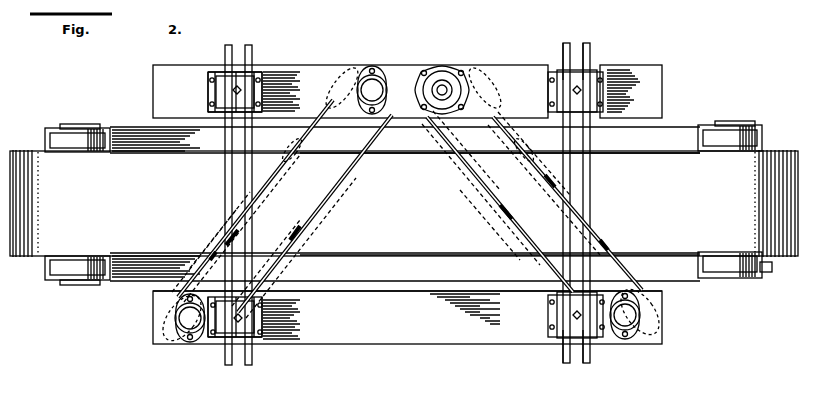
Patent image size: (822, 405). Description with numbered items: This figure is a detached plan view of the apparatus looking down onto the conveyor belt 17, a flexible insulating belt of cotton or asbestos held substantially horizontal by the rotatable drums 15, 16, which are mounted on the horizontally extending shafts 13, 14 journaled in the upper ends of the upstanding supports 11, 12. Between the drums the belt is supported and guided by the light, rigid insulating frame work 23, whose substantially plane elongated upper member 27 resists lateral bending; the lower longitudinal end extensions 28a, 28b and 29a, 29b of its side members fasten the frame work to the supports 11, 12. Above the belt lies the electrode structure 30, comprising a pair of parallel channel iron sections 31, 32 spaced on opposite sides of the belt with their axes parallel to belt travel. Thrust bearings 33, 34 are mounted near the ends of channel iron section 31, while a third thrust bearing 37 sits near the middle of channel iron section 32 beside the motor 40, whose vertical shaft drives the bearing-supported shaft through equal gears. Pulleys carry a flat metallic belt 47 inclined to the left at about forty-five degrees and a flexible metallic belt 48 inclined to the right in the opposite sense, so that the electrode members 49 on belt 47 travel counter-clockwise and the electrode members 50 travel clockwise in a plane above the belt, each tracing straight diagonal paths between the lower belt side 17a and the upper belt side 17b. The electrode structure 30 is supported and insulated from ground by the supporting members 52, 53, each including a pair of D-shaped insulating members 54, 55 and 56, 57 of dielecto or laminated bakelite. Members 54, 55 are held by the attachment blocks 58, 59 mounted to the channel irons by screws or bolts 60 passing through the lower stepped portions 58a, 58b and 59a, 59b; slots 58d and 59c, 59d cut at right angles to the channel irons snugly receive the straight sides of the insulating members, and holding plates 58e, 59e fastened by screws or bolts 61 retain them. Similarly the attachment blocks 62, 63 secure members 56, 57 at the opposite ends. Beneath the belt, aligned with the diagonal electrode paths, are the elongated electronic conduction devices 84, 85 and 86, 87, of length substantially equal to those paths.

The upstanding support 11 is at (56, 286).
The upstanding support 12 is at (772, 270).
The shaft 13 is at (70, 124).
The shaft 14 is at (735, 121).
The rotatable drum 15 is at (38, 262).
The rotatable drum 16 is at (776, 142).
The conveyor belt 17 is at (404, 200).
The lower belt side 17a is at (372, 256).
The upper belt side 17b is at (396, 153).
The frame work 23 is at (132, 122).
The upper member 27 is at (432, 280).
The lower longitudinal end extension 28a is at (708, 125).
The lower longitudinal end extension 28b is at (100, 128).
The lower longitudinal end extension 29a is at (710, 282).
The lower longitudinal end extension 29b is at (102, 281).
The electrode structure 30 is at (138, 76).
The channel iron section 31 is at (450, 340).
The channel iron section 32 is at (645, 60).
The thrust bearing 33 is at (188, 318).
The thrust bearing 34 is at (640, 316).
The thrust bearing 37 is at (374, 88).
The motor 40 is at (444, 88).
The metallic belt 47 is at (366, 152).
The metallic belt 48 is at (462, 160).
The electrode member 49 is at (346, 68).
The electrode member 50 is at (488, 88).
The supporting member 52 is at (246, 62).
The supporting member 53 is at (558, 36).
The insulating supporting member 54 is at (226, 183).
The insulating supporting member 55 is at (252, 224).
The insulating supporting member 56 is at (571, 186).
The insulating supporting member 57 is at (583, 222).
The attachment block 58 is at (260, 344).
The lower stepped portion 58a is at (214, 338).
The lower stepped portion 58b is at (266, 310).
The slot 58d is at (264, 325).
The holding plate 58e is at (238, 340).
The attachment block 59 is at (225, 68).
The lower stepped portion 59a is at (212, 90).
The lower stepped portion 59b is at (265, 80).
The slot 59c is at (210, 109).
The slot 59d is at (262, 70).
The holding plate 59e is at (274, 20).
The screws or bolts 60 is at (212, 79).
The screws or bolts 61 is at (232, 118).
The attachment block 62 is at (580, 344).
The attachment block 63 is at (573, 68).
The electronic conduction device 84 is at (216, 228).
The electronic conduction device 85 is at (326, 198).
The electronic conduction device 86 is at (458, 192).
The electronic conduction device 87 is at (626, 234).